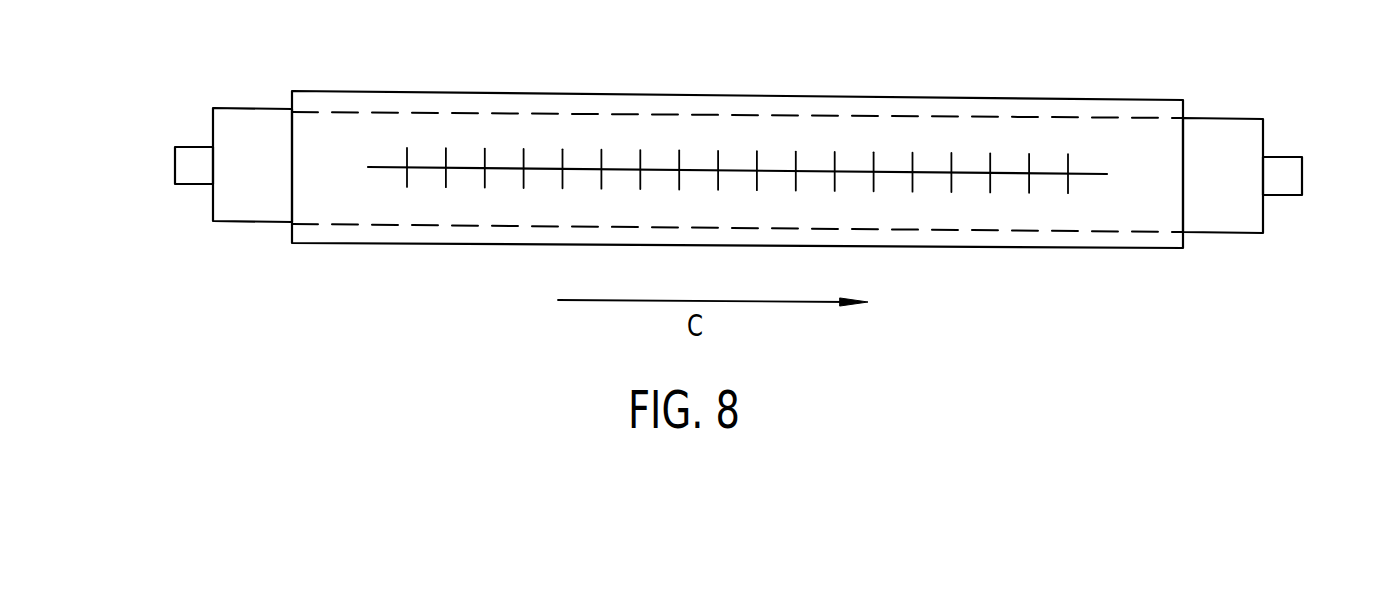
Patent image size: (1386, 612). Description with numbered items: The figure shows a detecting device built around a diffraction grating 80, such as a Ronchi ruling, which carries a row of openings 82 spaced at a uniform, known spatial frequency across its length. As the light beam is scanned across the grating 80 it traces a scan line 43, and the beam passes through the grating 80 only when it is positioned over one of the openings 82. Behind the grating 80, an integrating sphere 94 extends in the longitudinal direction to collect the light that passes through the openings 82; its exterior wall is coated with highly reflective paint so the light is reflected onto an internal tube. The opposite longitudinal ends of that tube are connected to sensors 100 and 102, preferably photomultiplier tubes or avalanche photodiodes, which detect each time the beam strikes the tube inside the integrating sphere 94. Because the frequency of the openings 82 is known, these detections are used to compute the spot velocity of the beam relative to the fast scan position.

The diffraction grating 80 is at (1050, 98).
The openings 82 is at (408, 153).
The scan line 43 is at (388, 167).
The integrating sphere 94 is at (1213, 233).
The sensor 100 is at (190, 185).
The sensor 102 is at (1278, 195).